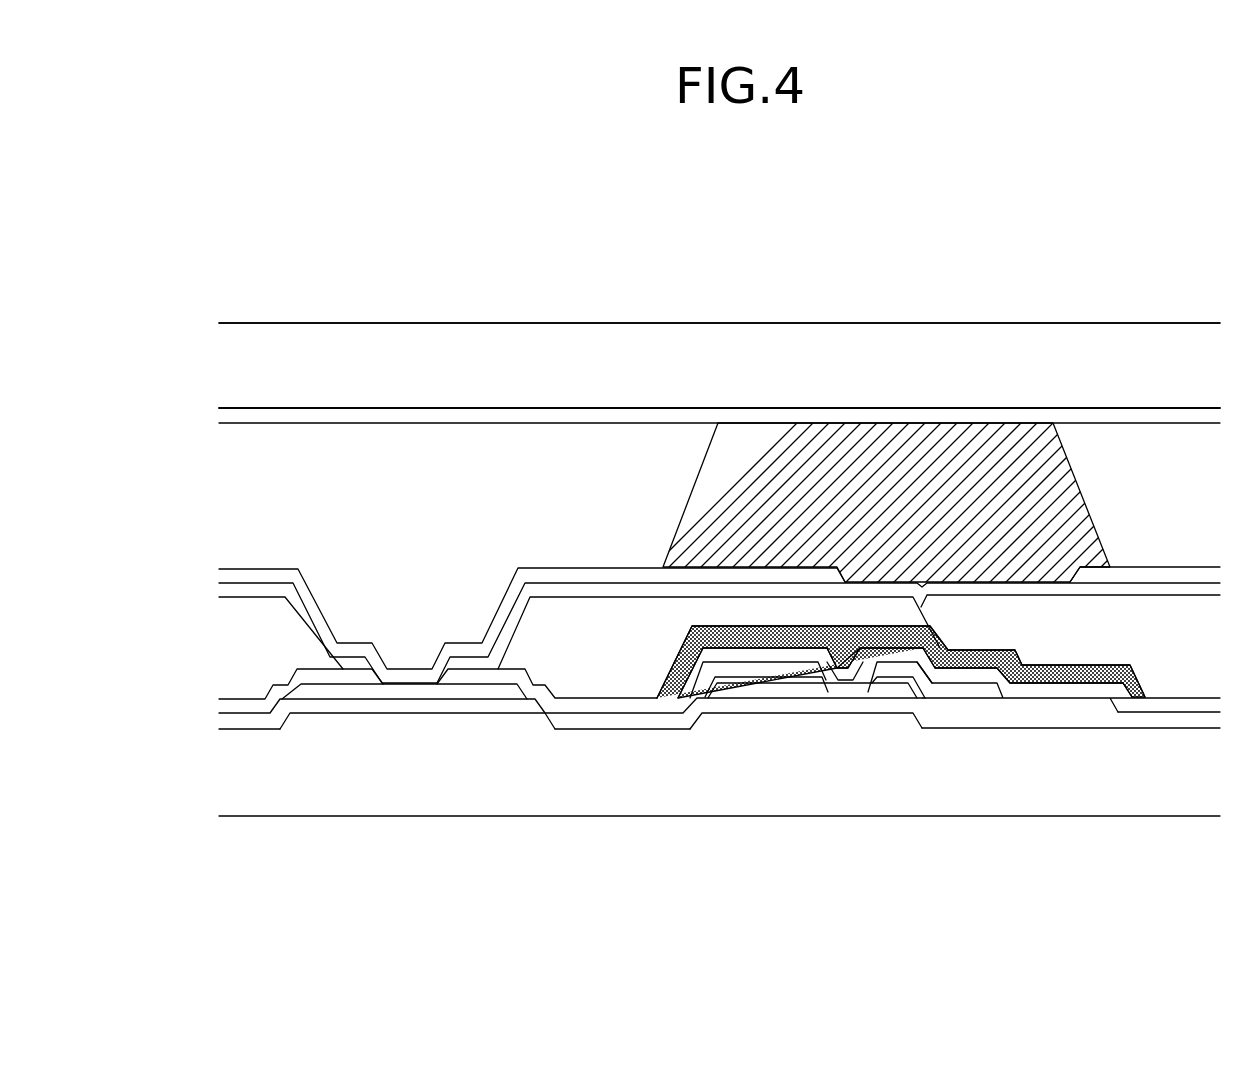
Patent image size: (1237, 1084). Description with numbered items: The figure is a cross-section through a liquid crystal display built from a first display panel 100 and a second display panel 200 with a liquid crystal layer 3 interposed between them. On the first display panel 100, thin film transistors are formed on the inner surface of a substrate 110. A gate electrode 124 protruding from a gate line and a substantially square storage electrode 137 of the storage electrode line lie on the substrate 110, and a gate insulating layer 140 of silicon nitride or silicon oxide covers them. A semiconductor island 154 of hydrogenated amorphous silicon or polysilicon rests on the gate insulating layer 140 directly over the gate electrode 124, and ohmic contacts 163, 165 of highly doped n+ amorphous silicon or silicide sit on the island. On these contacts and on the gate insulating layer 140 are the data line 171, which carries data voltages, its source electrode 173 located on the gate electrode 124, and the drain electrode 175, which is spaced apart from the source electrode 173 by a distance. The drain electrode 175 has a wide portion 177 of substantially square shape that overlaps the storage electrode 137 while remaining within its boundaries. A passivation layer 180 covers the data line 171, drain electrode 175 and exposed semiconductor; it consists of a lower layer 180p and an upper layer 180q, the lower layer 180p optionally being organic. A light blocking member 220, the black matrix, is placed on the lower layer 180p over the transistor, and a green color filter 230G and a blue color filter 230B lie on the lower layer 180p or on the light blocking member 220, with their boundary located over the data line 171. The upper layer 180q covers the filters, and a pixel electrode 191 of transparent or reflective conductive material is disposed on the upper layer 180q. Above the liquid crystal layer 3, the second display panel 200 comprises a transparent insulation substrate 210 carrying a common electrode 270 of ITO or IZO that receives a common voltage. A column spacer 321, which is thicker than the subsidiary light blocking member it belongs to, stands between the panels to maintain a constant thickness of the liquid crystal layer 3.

The liquid crystal layer 3 is at (210, 427).
The first display panel 100 is at (210, 570).
The substrate 110 is at (313, 797).
The gate electrode 124 is at (808, 720).
The storage electrode 137 is at (398, 722).
The gate insulating layer 140 is at (600, 720).
The semiconductor island 154 is at (855, 695).
The ohmic contact 163 is at (878, 682).
The ohmic contact 165 is at (762, 682).
The data line 171 is at (978, 692).
The source electrode 173 is at (905, 674).
The drain electrode 175 is at (730, 670).
The wide portion 177 is at (487, 692).
The passivation layer 180 is at (330, 528).
The lower layer 180p is at (347, 668).
The upper layer 180q is at (365, 685).
The pixel electrode 191 is at (540, 575).
The second display panel 200 is at (210, 323).
The insulation substrate 210 is at (885, 338).
The light blocking member 220 is at (1047, 675).
The green color filter 230G is at (253, 625).
The blue color filter 230B is at (1128, 625).
The common electrode 270 is at (778, 420).
The column spacer 321 is at (975, 455).